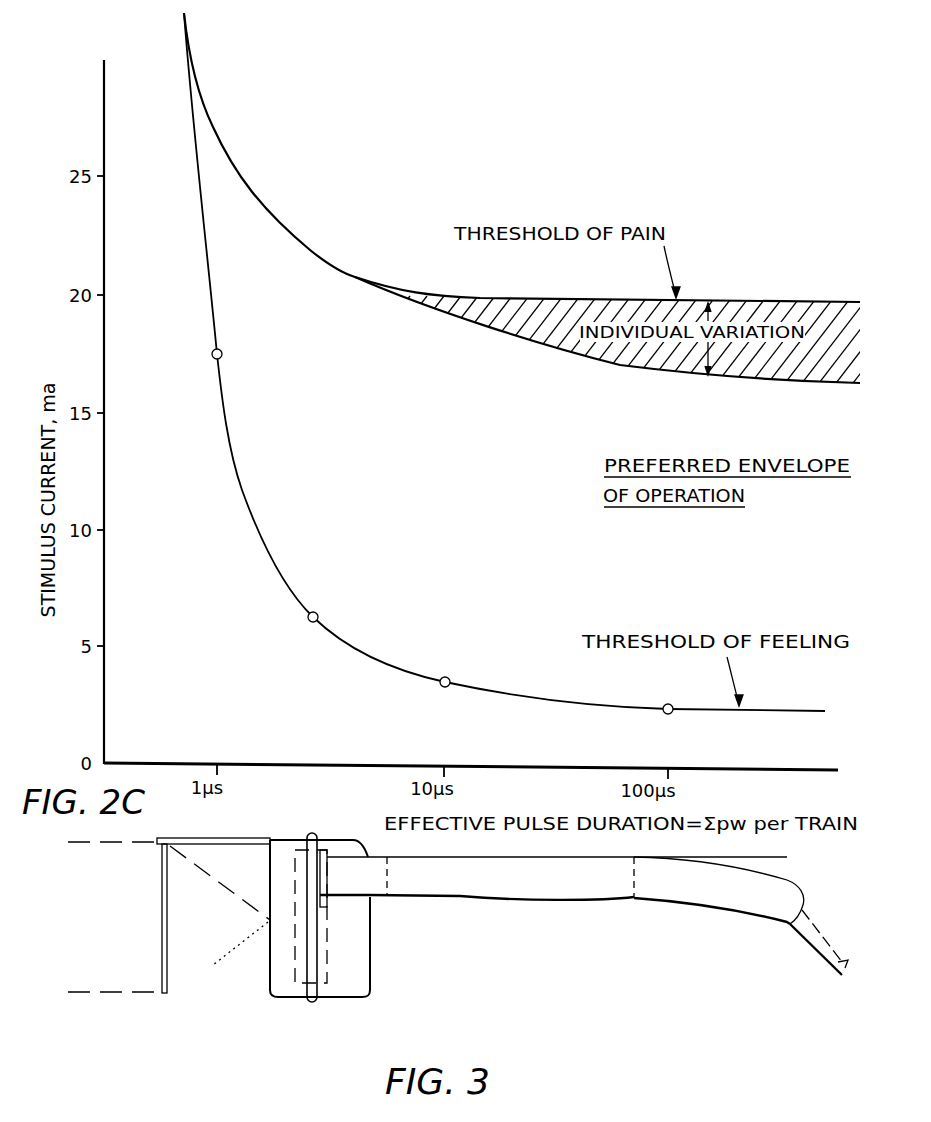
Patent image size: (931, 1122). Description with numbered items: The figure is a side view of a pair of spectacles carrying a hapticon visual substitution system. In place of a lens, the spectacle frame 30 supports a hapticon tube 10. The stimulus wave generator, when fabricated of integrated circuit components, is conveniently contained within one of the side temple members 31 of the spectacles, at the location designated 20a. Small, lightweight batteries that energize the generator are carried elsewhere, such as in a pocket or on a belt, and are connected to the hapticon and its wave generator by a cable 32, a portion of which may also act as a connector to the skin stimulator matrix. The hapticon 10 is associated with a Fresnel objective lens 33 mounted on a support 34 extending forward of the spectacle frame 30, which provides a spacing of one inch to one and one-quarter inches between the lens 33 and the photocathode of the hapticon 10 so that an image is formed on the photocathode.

The hapticon tube 10 is at (360, 985).
The location of stimulus wave generator 20a is at (486, 882).
The spectacle frame 30 is at (312, 1002).
The side temple member 31 is at (672, 888).
The cable 32 is at (815, 947).
The Fresnel objective lens 33 is at (162, 908).
The support 34 is at (225, 840).